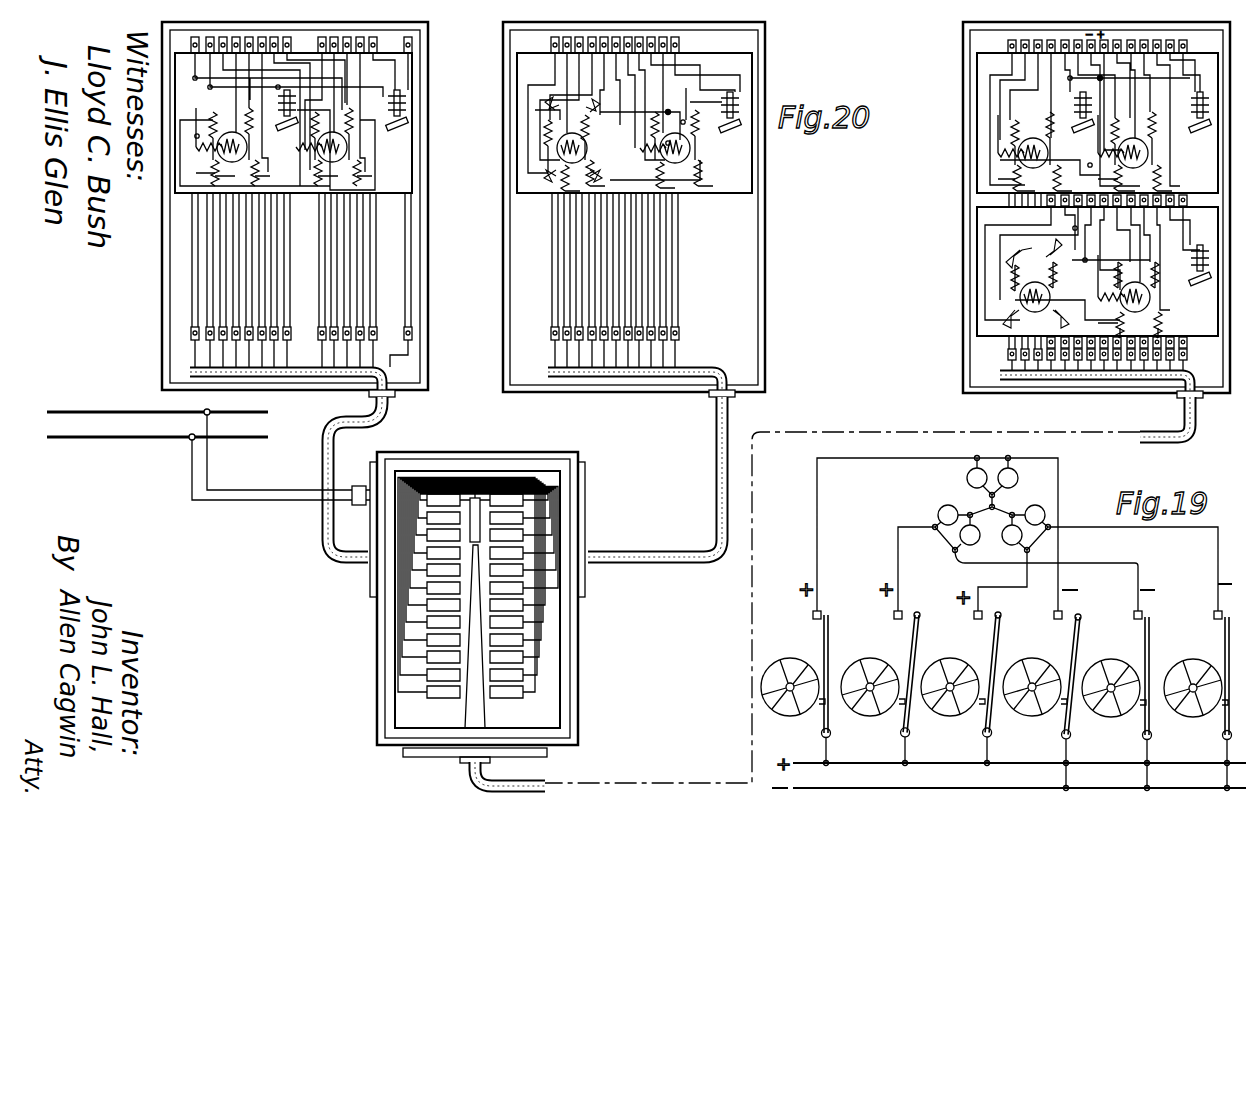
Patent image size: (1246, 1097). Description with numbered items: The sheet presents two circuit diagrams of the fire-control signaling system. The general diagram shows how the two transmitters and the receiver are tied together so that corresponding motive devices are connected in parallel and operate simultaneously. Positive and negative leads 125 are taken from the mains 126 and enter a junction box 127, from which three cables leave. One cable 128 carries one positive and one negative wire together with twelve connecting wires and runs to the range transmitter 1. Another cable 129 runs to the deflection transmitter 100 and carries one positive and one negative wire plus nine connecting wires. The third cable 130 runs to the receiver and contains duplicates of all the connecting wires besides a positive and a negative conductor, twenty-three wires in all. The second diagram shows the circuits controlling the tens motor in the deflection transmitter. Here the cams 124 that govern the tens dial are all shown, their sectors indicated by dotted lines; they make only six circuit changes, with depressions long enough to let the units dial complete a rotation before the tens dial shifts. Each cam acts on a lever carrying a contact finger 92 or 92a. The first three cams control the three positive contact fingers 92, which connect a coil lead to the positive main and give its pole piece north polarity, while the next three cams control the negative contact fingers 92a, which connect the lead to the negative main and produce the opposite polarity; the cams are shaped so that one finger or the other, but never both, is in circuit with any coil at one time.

In FIG. 20, the range transmitter 1 is at (428, 286).
In FIG. 20, the deflection transmitter 100 is at (765, 272).
In FIG. 20, the positive and negative leads 125 is at (281, 460).
In FIG. 20, the mains 126 is at (157, 425).
In FIG. 20, the junction box 127 is at (380, 643).
In FIG. 20, the cable 128 is at (338, 444).
In FIG. 20, the cable 129 is at (716, 479).
In FIG. 20, the cable 130 is at (1180, 420).
In FIG. 19, the contact finger 92 is at (829, 633).
In FIG. 19, the contact finger 92a is at (1083, 620).
In FIG. 19, the cams 124 is at (994, 674).